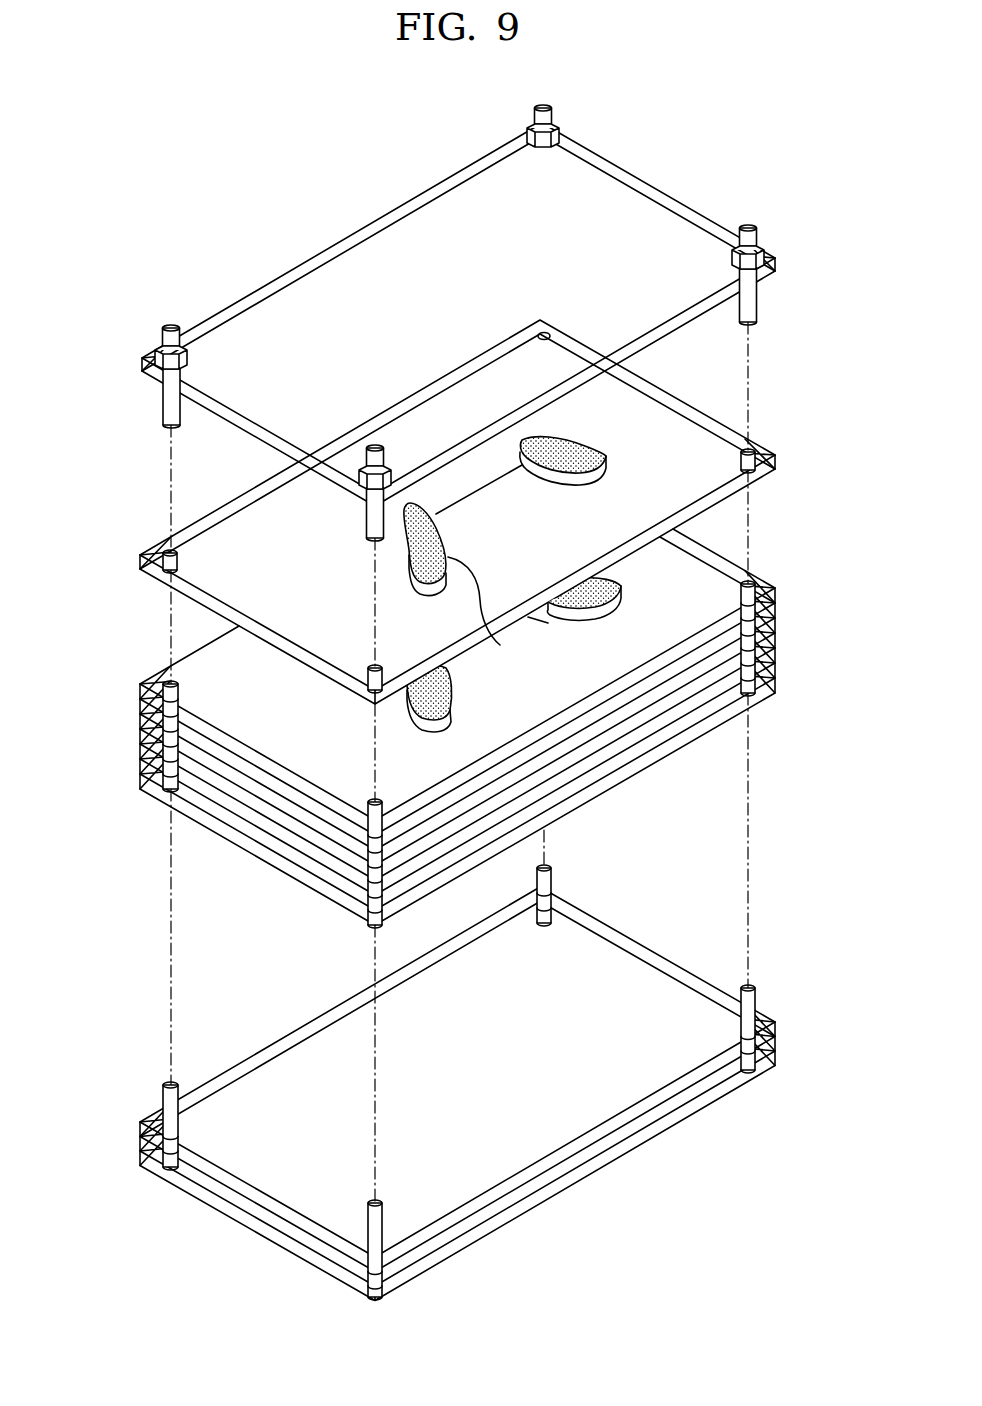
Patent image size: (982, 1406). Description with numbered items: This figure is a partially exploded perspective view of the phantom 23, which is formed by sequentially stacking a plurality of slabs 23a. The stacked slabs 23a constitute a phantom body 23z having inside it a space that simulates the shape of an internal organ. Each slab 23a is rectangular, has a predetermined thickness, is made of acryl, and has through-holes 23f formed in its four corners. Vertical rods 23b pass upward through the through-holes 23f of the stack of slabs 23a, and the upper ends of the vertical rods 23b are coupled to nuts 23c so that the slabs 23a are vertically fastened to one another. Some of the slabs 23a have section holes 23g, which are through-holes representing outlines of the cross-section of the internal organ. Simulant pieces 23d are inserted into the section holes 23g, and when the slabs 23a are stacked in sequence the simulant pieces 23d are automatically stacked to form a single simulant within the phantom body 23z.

The phantom 23 is at (455, 703).
The slab 23a is at (354, 236).
The vertical rod 23b is at (552, 883).
The nut 23c is at (154, 341).
The simulant piece 23d is at (606, 452).
The through-hole 23f is at (752, 583).
The section hole 23g is at (495, 638).
The phantom body 23z is at (136, 778).